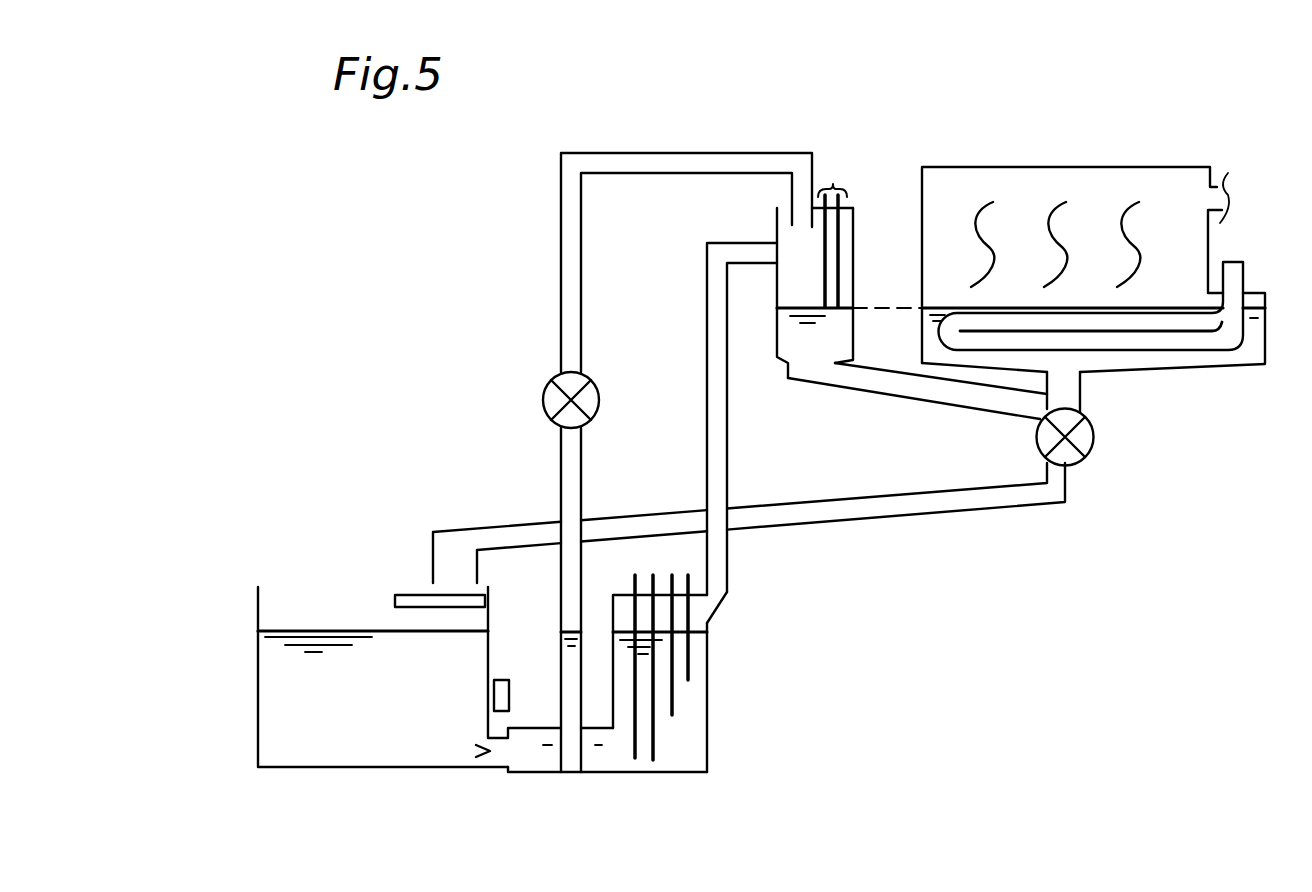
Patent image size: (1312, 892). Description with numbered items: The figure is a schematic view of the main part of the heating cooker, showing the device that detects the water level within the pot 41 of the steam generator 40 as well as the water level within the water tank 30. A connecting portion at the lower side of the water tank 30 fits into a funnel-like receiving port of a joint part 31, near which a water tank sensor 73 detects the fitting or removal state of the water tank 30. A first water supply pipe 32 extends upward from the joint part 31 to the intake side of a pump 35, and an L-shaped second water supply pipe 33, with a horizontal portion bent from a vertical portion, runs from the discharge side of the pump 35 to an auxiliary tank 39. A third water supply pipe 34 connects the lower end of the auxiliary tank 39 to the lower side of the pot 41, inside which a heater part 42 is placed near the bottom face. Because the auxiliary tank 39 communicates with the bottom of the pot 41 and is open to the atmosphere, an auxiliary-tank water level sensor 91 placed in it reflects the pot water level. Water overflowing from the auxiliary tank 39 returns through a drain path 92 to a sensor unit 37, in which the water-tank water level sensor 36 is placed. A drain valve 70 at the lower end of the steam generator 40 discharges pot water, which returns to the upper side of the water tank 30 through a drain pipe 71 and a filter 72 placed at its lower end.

The water tank 30 is at (258, 707).
The joint part 31 is at (509, 775).
The first water supply pipe 32 is at (561, 480).
The second water supply pipe 33 is at (561, 222).
The third water supply pipe 34 is at (917, 400).
The pump 35 is at (543, 397).
The water-tank water level sensor 36 is at (695, 570).
The sensor unit 37 is at (707, 722).
The auxiliary tank 39 is at (853, 262).
The steam generator 40 is at (1031, 138).
The pot 41 is at (922, 197).
The heater part 42 is at (1210, 353).
The drain valve 70 is at (1093, 442).
The drain pipe 71 is at (857, 522).
The filter 72 is at (412, 595).
The water tank sensor 73 is at (503, 680).
The auxiliary-tank water level sensor 91 is at (833, 184).
The drain path 92 is at (728, 432).